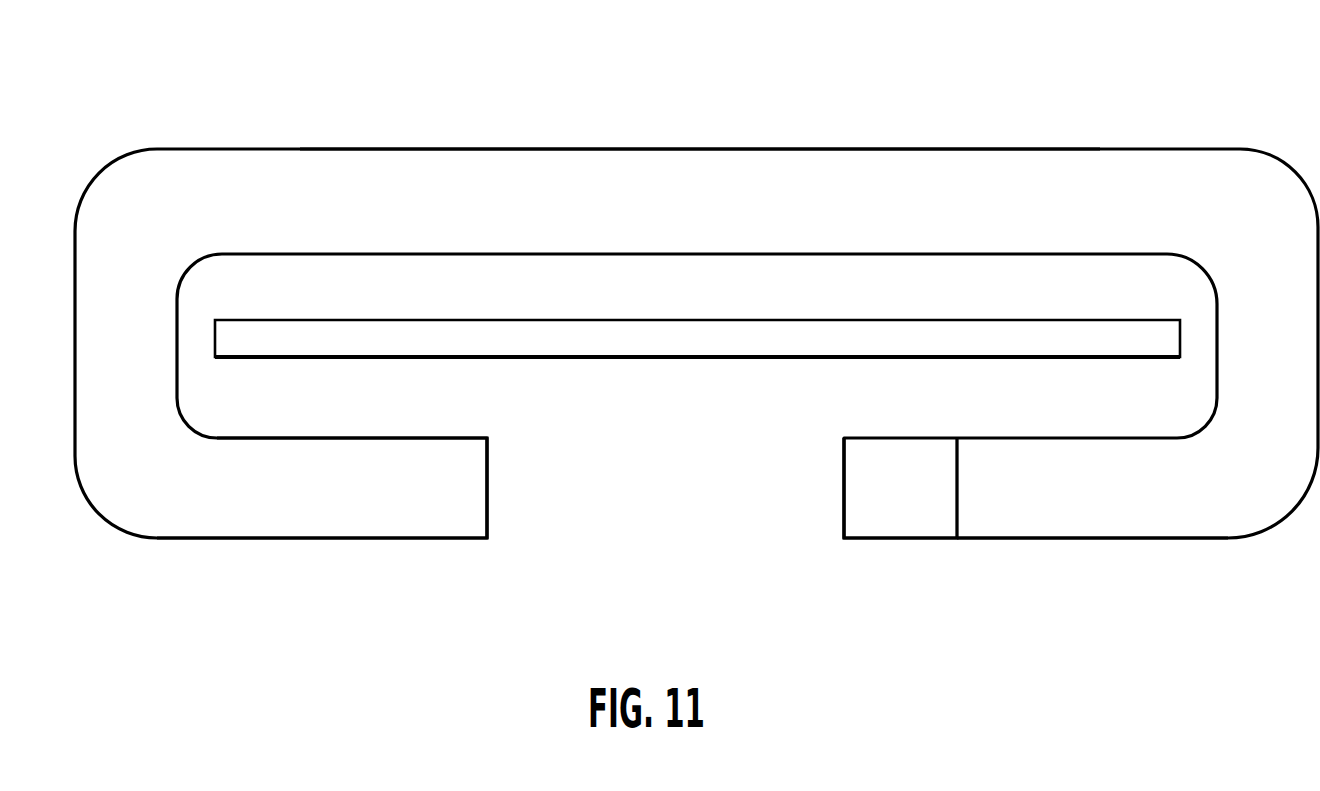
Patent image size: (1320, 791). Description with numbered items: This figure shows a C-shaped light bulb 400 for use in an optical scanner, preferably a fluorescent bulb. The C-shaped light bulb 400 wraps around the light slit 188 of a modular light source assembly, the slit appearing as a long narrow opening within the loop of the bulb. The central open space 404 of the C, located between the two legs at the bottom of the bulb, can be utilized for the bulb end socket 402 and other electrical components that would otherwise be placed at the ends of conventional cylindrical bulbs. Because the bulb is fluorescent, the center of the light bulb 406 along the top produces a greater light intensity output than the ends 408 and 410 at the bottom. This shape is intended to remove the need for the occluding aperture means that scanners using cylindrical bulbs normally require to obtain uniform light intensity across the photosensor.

The C-shaped light bulb 400 is at (1088, 97).
The center of the light bulb 406 is at (716, 163).
The light slit 188 is at (562, 340).
The end of the light bulb 408 is at (381, 522).
The central open space 404 is at (826, 541).
The bulb end socket 402 is at (898, 525).
The end of the light bulb 410 is at (1145, 520).